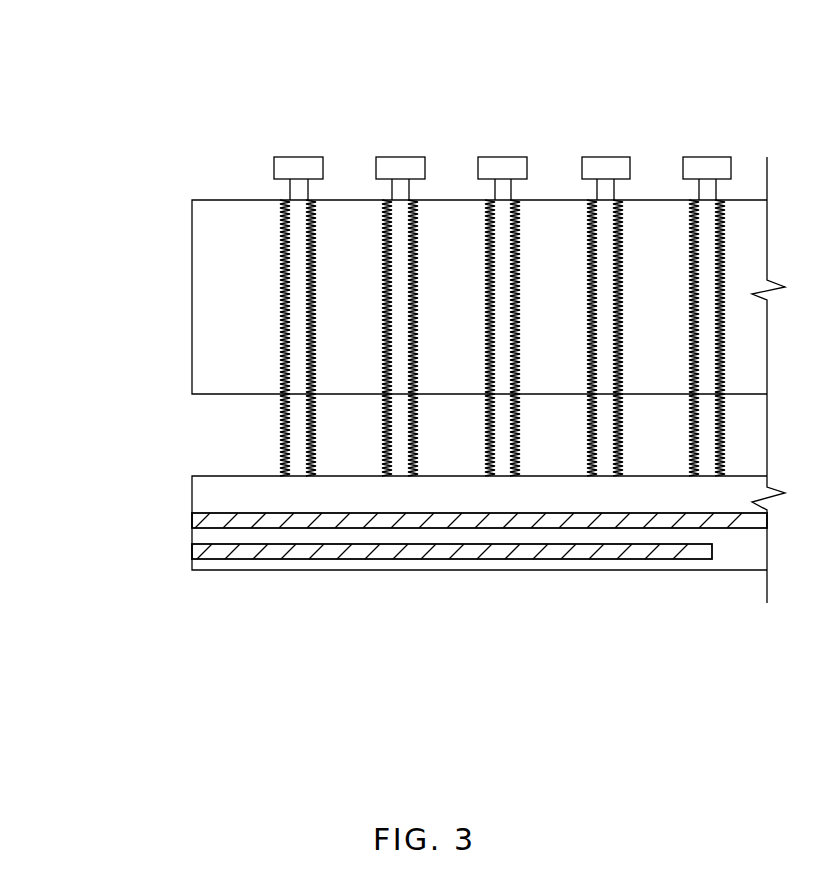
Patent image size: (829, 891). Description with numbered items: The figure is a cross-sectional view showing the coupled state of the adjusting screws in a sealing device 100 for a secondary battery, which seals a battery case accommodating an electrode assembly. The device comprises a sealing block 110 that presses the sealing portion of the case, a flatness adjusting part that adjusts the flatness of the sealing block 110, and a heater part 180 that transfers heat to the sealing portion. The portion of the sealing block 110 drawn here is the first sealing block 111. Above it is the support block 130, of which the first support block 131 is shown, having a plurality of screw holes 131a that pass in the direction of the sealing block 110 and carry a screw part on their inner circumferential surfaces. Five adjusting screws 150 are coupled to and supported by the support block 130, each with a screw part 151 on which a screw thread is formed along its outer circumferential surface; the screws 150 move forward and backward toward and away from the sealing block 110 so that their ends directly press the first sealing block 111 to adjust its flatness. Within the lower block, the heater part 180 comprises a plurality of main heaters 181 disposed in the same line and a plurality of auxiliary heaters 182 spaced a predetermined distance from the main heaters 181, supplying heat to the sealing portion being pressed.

The sealing device 100 is at (768, 50).
The sealing block 110 is at (402, 519).
The first sealing block 111 is at (183, 494).
The support block 130 is at (402, 297).
The first support block 131 is at (183, 298).
The screw hole 131a is at (281, 263).
The adjusting screw 150 is at (471, 248).
The screw part 151 is at (296, 230).
The heater part 180 is at (479, 611).
The main heater 181 is at (528, 523).
The auxiliary heater 182 is at (463, 552).